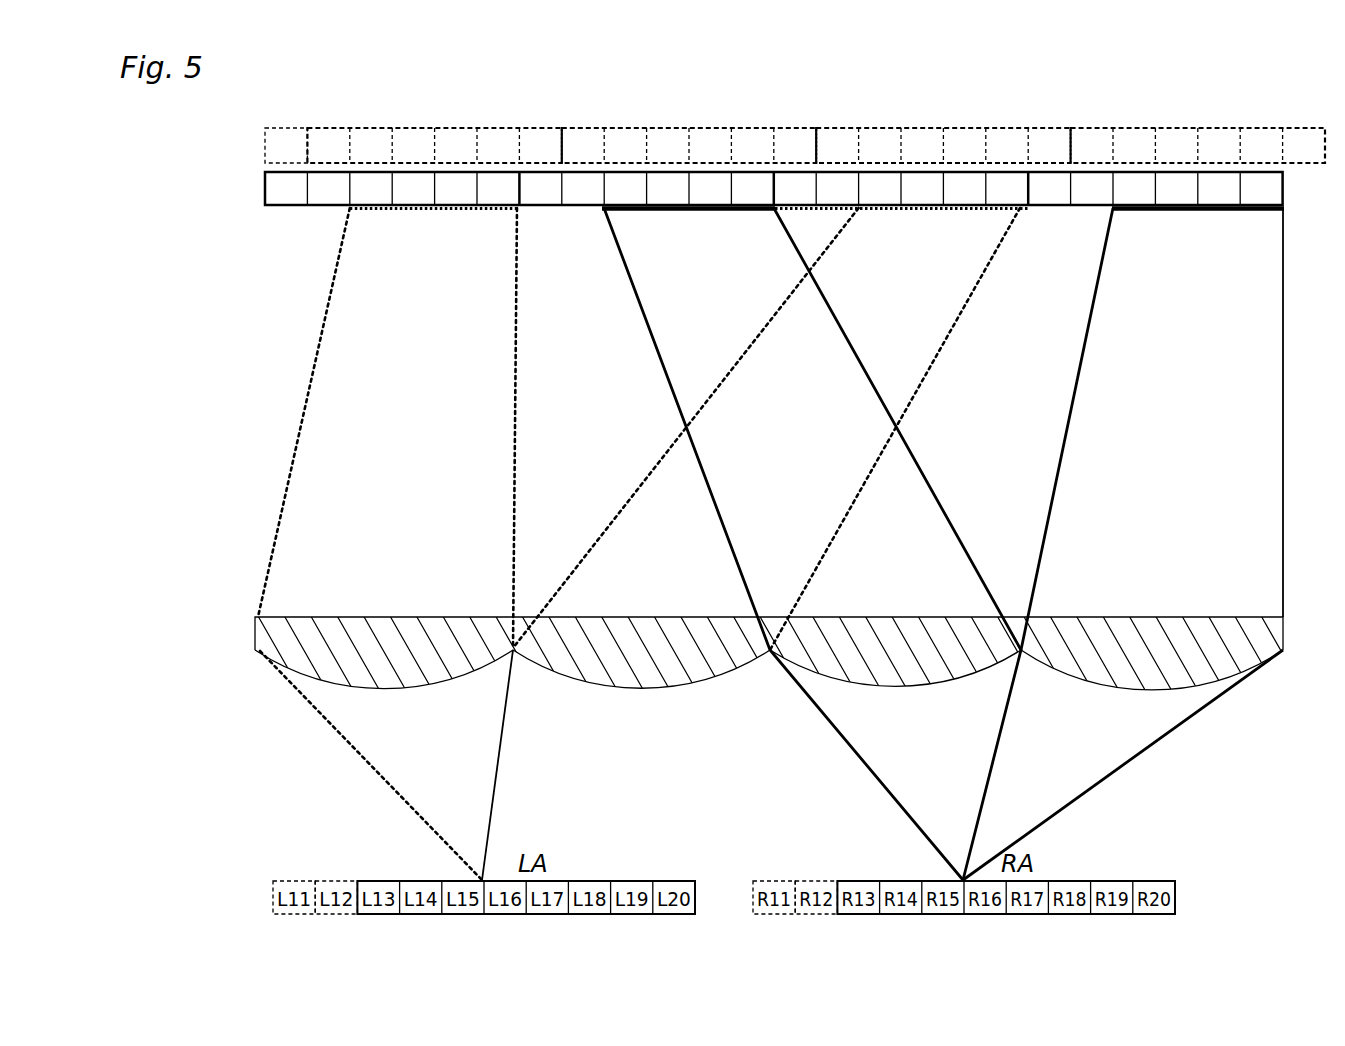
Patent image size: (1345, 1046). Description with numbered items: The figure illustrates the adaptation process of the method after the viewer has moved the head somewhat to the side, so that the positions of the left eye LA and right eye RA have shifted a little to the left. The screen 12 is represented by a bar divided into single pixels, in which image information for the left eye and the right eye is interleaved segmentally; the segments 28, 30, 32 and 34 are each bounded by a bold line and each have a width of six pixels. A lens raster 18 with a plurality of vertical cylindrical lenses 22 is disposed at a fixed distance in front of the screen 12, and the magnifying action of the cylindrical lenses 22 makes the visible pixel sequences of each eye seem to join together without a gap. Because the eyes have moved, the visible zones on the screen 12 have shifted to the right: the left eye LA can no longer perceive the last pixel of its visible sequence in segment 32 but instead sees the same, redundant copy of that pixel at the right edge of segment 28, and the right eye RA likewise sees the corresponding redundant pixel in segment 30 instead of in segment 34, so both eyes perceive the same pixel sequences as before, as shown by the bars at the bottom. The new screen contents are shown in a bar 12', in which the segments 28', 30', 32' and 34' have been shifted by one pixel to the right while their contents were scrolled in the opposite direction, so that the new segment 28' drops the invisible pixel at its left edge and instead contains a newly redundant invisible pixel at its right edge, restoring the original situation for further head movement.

The screen 12 is at (734, 230).
The bar showing new screen contents 12' is at (753, 117).
The lens raster 18 is at (594, 690).
The cylindrical lens 22 is at (1105, 684).
The segment 28 is at (393, 230).
The segment 30 is at (652, 230).
The segment 32 is at (899, 230).
The segment 34 is at (1163, 230).
The new segment 28' is at (434, 109).
The new segment 30' is at (689, 109).
The new segment 32' is at (943, 109).
The new segment 34' is at (1198, 109).